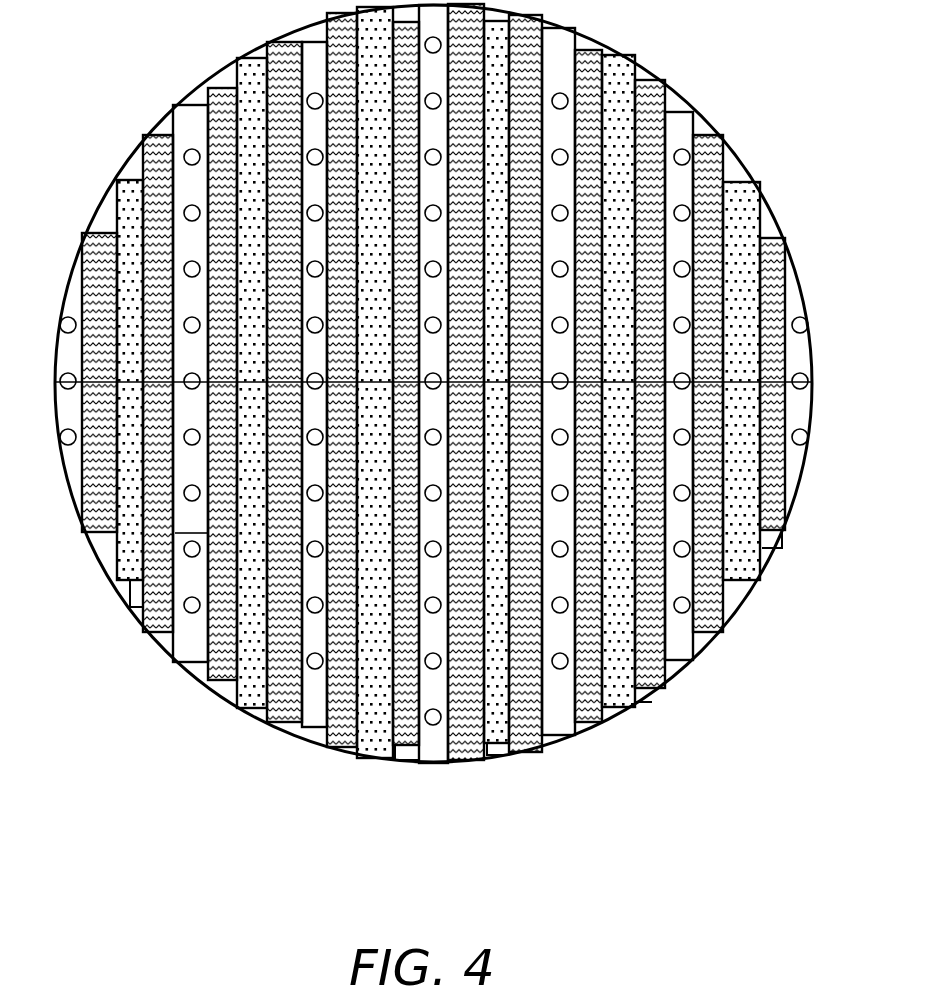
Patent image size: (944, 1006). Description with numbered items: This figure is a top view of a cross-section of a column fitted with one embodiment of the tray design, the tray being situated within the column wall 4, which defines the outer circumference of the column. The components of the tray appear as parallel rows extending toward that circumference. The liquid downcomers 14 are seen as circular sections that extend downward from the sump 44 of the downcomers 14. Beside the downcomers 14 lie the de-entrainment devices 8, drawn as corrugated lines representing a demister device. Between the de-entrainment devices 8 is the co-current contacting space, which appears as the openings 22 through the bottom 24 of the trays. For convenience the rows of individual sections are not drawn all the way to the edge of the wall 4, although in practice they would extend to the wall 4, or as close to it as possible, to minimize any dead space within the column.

The column wall 4 is at (767, 193).
The de-entrainment devices 8 is at (105, 233).
The liquid downcomers 14 is at (684, 207).
The openings 22 is at (128, 539).
The bottom 24 is at (130, 585).
The sump 44 is at (680, 242).